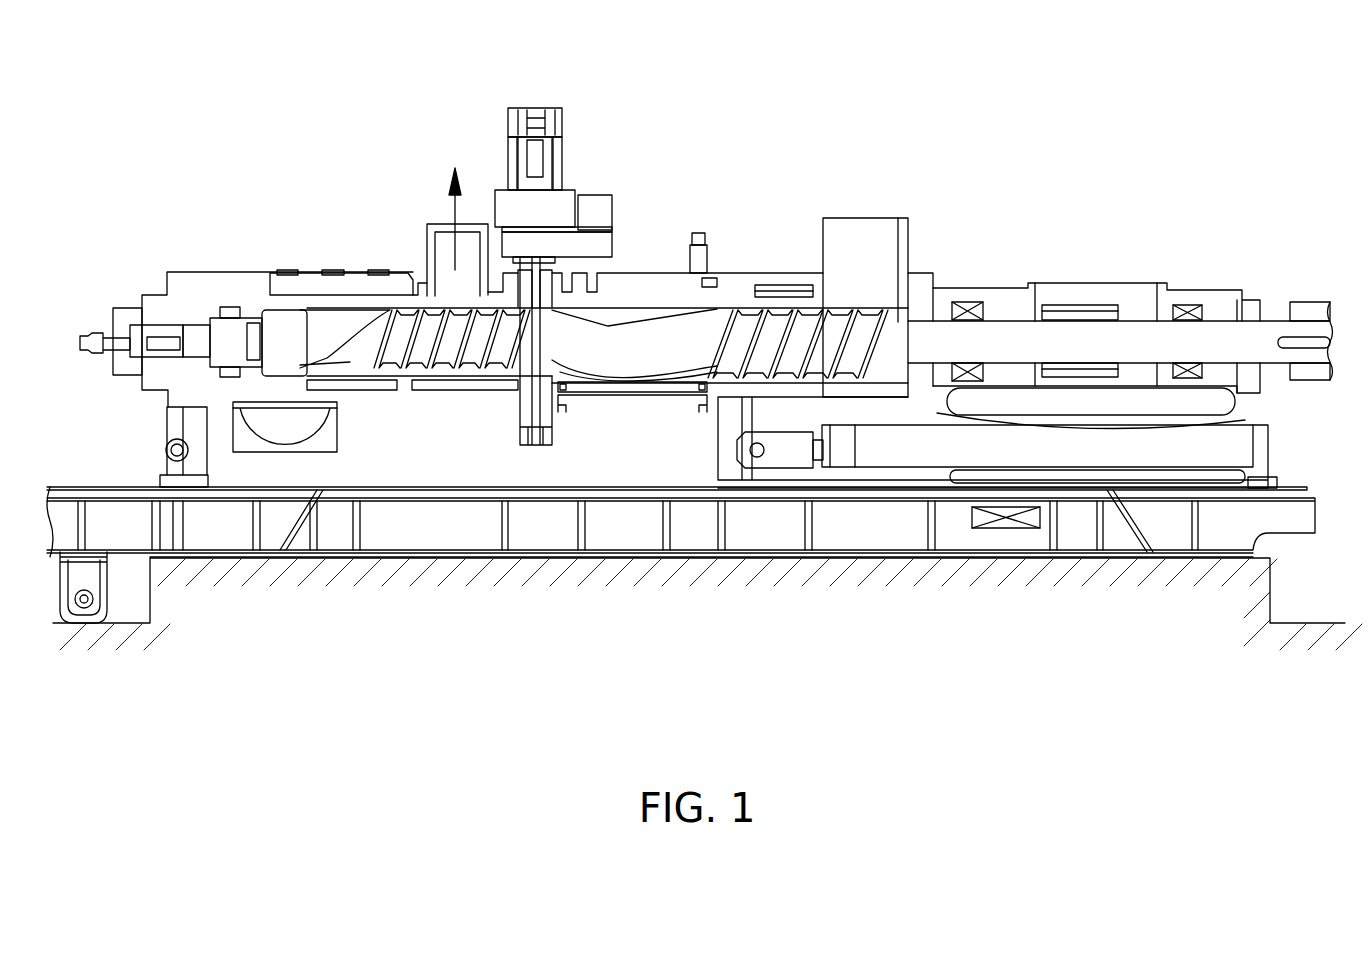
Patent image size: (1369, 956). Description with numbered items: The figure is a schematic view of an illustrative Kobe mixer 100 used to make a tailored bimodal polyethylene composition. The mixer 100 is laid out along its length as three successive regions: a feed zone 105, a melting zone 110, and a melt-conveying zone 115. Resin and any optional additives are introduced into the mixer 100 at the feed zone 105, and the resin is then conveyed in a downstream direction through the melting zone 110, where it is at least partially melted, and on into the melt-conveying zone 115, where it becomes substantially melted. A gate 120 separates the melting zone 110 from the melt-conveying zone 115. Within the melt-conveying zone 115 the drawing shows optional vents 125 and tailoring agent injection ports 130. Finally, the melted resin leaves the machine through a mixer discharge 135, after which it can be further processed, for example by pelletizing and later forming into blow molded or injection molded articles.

The mixer 100 is at (704, 410).
The feed zone 105 is at (898, 370).
The melting zone 110 is at (552, 450).
The melt-conveying zone 115 is at (262, 412).
The gate 120 is at (533, 446).
The vents 125 is at (438, 222).
The tailoring agent injection ports 130 is at (378, 270).
The mixer discharge 135 is at (210, 408).